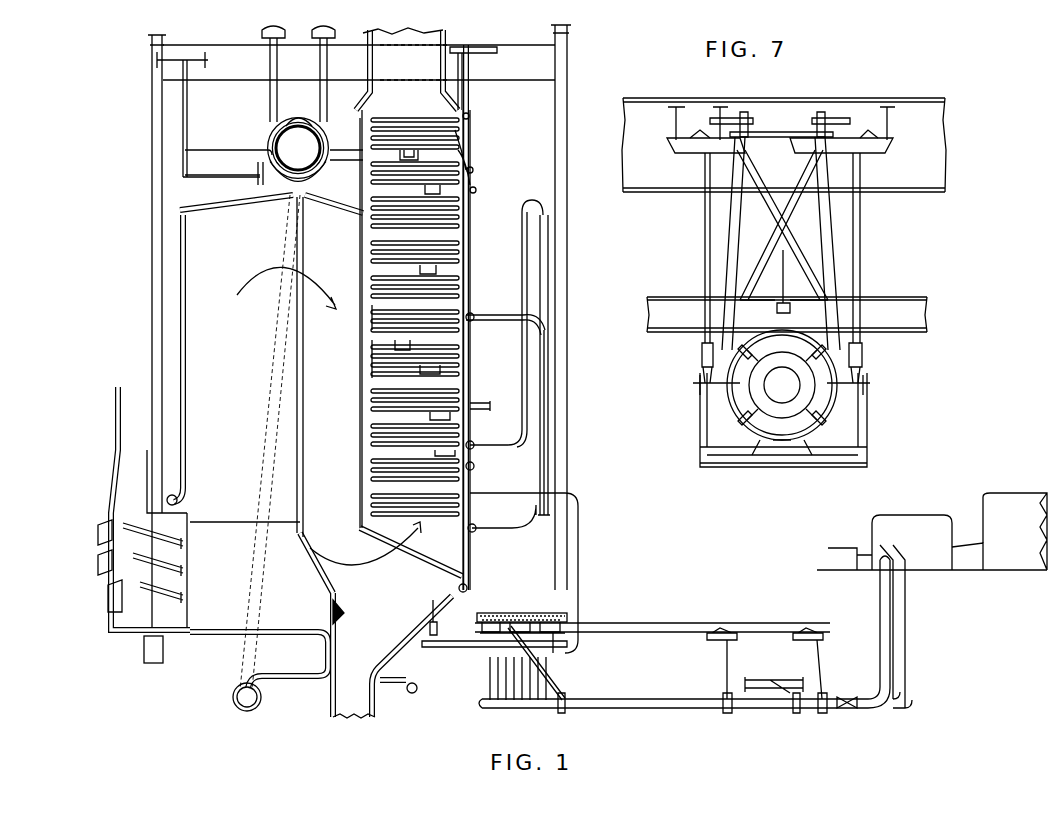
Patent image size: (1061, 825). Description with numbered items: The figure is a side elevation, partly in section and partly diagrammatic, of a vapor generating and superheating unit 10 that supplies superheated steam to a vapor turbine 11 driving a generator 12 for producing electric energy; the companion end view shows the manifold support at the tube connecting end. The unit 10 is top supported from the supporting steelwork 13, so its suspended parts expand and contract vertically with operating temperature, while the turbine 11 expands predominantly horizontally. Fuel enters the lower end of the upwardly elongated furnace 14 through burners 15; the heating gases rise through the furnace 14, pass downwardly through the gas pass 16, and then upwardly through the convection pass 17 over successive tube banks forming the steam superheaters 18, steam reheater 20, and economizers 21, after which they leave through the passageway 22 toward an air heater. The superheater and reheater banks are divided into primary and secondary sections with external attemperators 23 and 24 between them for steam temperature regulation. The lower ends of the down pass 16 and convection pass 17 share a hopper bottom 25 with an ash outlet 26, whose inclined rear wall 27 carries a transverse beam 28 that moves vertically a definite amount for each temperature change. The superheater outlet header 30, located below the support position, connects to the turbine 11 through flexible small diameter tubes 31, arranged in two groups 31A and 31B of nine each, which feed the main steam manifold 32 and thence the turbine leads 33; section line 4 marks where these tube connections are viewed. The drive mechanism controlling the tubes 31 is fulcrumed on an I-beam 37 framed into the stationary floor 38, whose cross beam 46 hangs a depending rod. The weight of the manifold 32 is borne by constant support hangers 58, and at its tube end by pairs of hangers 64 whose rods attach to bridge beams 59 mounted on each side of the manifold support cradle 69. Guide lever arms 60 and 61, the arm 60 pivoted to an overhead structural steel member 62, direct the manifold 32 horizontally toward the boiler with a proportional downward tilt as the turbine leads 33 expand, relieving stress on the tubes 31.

In FIG. 1, the section line 4 is at (489, 589).
In FIG. 1, the vapor generating and superheating unit 10 is at (488, 110).
In FIG. 1, the vapor turbine 11 is at (907, 522).
In FIG. 1, the generator 12 is at (1005, 500).
In FIG. 1, the supporting steelwork 13 is at (190, 122).
In FIG. 1, the furnace 14 is at (237, 373).
In FIG. 1, the burners 15 is at (186, 540).
In FIG. 1, the gas pass 16 is at (332, 403).
In FIG. 1, the convection pass 17 is at (405, 531).
In FIG. 1, the steam superheaters 18 is at (470, 235).
In FIG. 1, the steam reheater 20 is at (466, 322).
In FIG. 1, the economizers 21 is at (455, 135).
In FIG. 1, the passageway 22 is at (415, 88).
In FIG. 1, the external attemperator 23 is at (525, 265).
In FIG. 1, the external attemperator 24 is at (549, 380).
In FIG. 1, the hopper bottom 25 is at (361, 653).
In FIG. 1, the ash outlet 26 is at (355, 690).
In FIG. 1, the rear wall 27 is at (410, 640).
In FIG. 1, the transverse beam 28 is at (432, 635).
In FIG. 1, the superheater outlet header 30 is at (474, 468).
In FIG. 1, the flexible tubes 31 is at (579, 540).
In FIG. 1, the tube group 31A is at (490, 680).
In FIG. 1, the tube group 31B is at (582, 653).
In FIG. 1, the main steam manifold 32 is at (688, 720).
In FIG. 1, the turbine leads 33 is at (892, 620).
In FIG. 1, the I-beam 37 is at (570, 625).
In FIG. 7, the I-beam 37 is at (637, 157).
In FIG. 1, the stationary floor 38 is at (522, 612).
In FIG. 1, the cross beam 46 is at (490, 622).
In FIG. 1, the constant support hangers 58 is at (710, 641).
In FIG. 7, the bridge beams 59 is at (866, 370).
In FIG. 1, the guide lever arm 60 is at (780, 680).
In FIG. 1, the guide lever arm 61 is at (552, 684).
In FIG. 7, the guide lever arm 61 is at (738, 222).
In FIG. 1, the overhead structural steel member 62 is at (747, 661).
In FIG. 7, the constant support hangers 64 is at (690, 160).
In FIG. 7, the manifold support cradle 69 is at (858, 422).